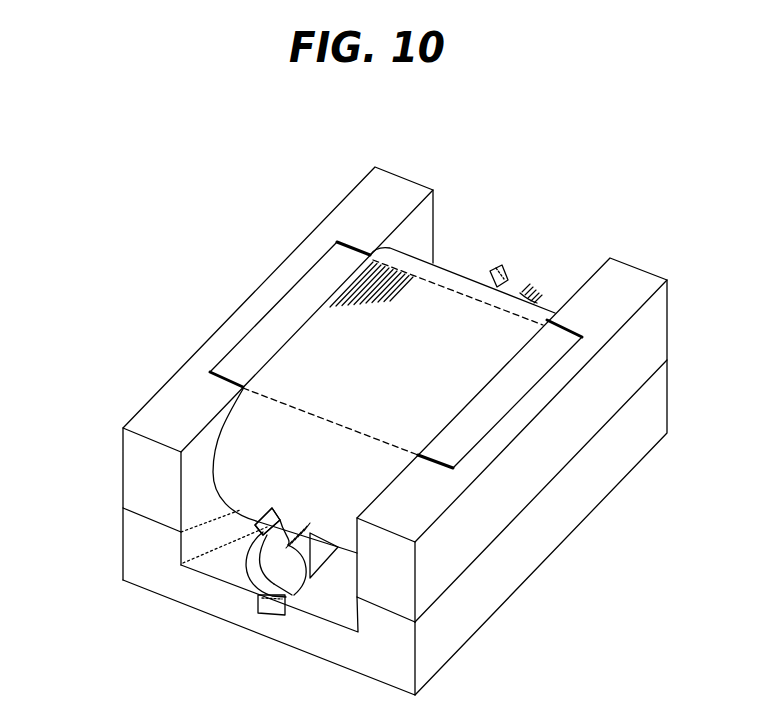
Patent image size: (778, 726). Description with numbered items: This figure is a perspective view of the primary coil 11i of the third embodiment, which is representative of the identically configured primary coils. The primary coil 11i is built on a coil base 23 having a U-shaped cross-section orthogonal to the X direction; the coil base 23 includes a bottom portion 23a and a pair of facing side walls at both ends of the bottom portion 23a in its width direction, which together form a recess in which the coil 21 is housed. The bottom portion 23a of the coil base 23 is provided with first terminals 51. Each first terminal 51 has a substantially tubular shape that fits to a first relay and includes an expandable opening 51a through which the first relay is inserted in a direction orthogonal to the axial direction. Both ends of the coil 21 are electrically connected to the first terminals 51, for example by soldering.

The primary coil 11i is at (249, 294).
The coil 21 is at (447, 307).
The coil base 23 is at (563, 525).
The bottom portion 23a is at (346, 648).
The first terminal 51 is at (538, 298).
The expandable opening 51a is at (258, 524).